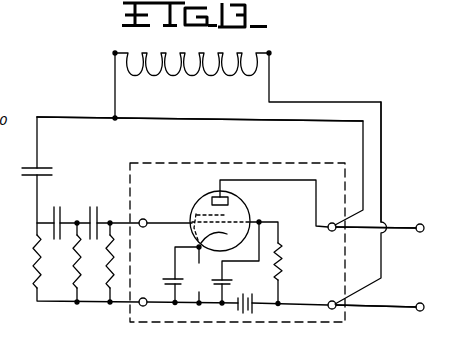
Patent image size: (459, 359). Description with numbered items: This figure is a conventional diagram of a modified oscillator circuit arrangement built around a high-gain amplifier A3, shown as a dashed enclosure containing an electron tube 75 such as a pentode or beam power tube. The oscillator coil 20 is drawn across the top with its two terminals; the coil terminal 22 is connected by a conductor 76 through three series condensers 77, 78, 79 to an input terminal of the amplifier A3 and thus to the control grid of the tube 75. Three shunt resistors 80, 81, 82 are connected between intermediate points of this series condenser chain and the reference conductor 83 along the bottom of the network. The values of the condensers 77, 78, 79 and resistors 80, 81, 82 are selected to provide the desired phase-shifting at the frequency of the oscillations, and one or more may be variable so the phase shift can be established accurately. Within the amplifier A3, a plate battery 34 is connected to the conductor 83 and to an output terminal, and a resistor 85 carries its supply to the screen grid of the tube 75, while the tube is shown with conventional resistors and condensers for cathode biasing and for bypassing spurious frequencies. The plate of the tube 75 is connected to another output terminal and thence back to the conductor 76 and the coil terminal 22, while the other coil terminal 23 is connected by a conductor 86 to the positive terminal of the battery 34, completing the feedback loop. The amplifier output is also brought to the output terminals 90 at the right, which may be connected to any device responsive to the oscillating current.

The coil 20 is at (185, 70).
The coil terminal 22 is at (113, 54).
The coil terminal 23 is at (272, 54).
The plate battery 34 is at (246, 298).
The electron tube 75 is at (242, 205).
The conductor 76 is at (90, 106).
The series condenser 77 is at (48, 173).
The series condenser 78 is at (67, 221).
The series condenser 79 is at (103, 221).
The shunt resistor 80 is at (27, 276).
The shunt resistor 81 is at (71, 273).
The shunt resistor 82 is at (105, 273).
The reference conductor 83 is at (161, 306).
The resistor 85 is at (292, 261).
The conductor 86 is at (383, 156).
The output terminals 90 is at (379, 267).
The amplifier A3 is at (257, 332).